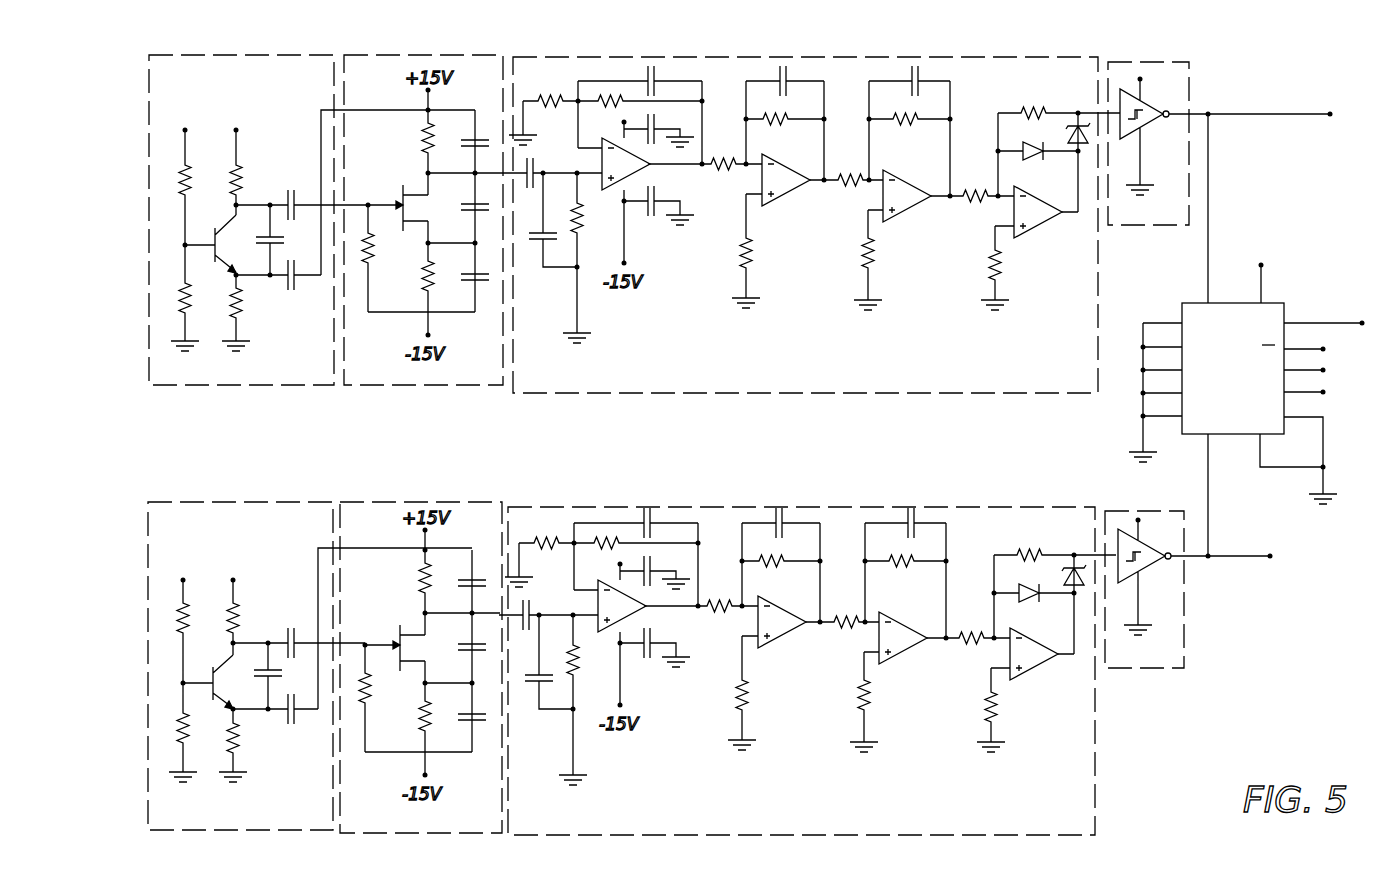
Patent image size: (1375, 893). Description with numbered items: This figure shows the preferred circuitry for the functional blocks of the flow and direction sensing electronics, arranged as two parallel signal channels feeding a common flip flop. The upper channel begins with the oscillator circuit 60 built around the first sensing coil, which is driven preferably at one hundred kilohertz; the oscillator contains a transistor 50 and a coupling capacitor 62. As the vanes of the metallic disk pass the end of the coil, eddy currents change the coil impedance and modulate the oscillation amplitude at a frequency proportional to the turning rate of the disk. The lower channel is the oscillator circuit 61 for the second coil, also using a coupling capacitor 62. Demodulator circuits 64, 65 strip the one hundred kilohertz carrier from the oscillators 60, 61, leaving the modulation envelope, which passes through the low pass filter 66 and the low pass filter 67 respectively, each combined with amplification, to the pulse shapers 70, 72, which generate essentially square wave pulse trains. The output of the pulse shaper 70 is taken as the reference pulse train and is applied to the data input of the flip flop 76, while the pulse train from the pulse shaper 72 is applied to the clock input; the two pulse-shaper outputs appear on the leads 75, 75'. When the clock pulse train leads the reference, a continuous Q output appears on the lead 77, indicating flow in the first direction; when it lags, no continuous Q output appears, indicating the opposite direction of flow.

The transistor 50 is at (251, 203).
The coupling capacitor 62 is at (354, 417).
The oscillator circuit 60 is at (241, 245).
The oscillator circuit 61 is at (237, 502).
The demodulator circuit 64 is at (427, 385).
The demodulator circuit 65 is at (460, 502).
The low pass filter 66 is at (820, 393).
The low pass filter 67 is at (730, 507).
The pulse shaper 70 is at (1140, 225).
The pulse shaper 72 is at (1152, 668).
The lead 75 is at (1251, 134).
The output line 75' is at (1235, 578).
The flip flop 76 is at (1284, 303).
The lead 77 is at (1342, 330).